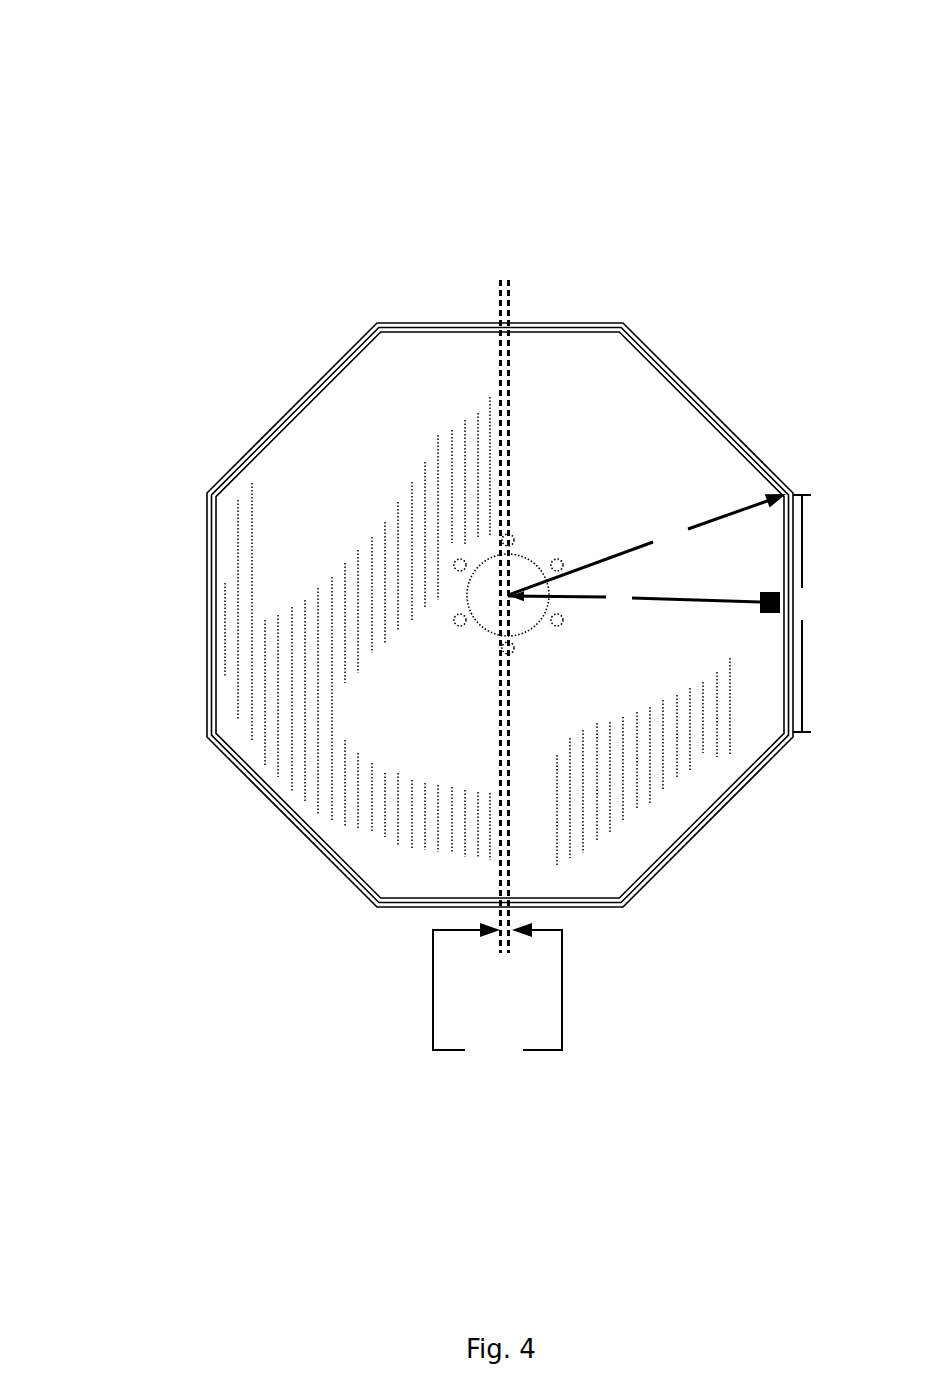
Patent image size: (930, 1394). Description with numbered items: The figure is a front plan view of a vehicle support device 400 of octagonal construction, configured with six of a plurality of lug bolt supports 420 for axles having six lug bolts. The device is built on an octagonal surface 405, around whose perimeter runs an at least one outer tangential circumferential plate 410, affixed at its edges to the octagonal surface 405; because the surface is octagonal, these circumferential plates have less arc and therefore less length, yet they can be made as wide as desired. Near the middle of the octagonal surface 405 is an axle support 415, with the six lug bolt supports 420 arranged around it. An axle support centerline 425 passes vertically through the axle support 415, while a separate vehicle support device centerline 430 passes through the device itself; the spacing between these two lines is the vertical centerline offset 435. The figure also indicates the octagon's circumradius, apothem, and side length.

The vehicle support device 400 is at (158, 72).
The octagonal surface 405 is at (477, 631).
The outer tangential circumferential plate 410 is at (235, 436).
The axle support 415 is at (472, 555).
The lug bolt supports 420 is at (440, 582).
The axle support centerline 425 is at (484, 676).
The vehicle support device centerline 430 is at (495, 720).
The vertical centerline offset 435 is at (497, 994).